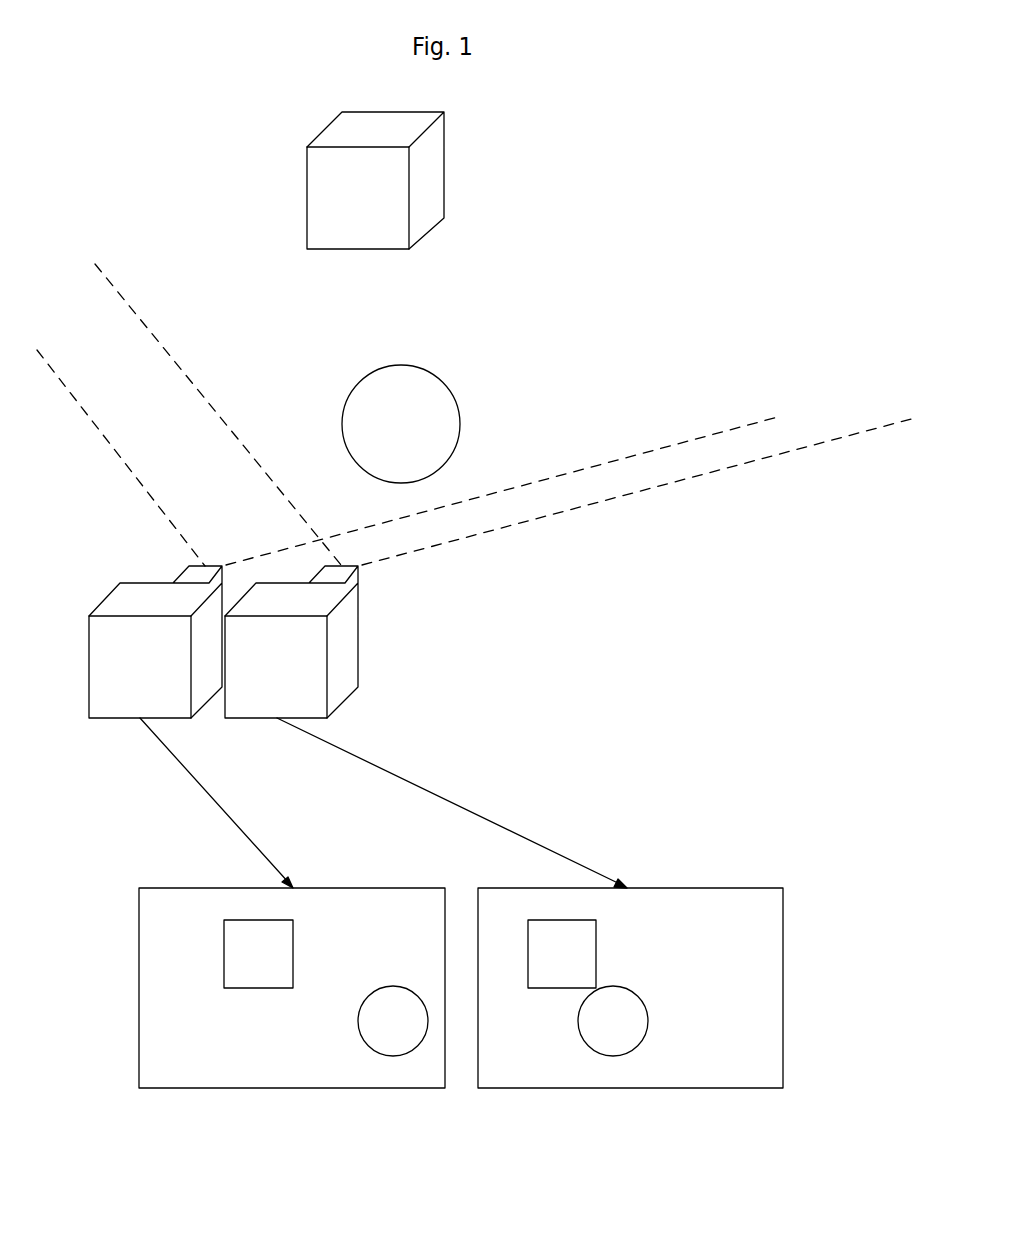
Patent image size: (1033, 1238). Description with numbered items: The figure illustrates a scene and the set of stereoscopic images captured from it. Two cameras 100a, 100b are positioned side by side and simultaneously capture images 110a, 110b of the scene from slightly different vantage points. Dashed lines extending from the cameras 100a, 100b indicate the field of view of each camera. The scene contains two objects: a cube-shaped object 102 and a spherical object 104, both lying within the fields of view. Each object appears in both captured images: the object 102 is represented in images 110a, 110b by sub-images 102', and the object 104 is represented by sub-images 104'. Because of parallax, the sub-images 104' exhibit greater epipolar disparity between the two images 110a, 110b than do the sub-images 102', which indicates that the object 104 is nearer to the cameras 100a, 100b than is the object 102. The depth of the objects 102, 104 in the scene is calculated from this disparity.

The object 102 is at (375, 180).
The object 104 is at (401, 424).
The camera 100a is at (111, 679).
The camera 100b is at (246, 679).
The image 110a is at (343, 1088).
The image 110b is at (680, 1088).
The sub-image 102' is at (410, 954).
The sub-image 104' is at (503, 1021).